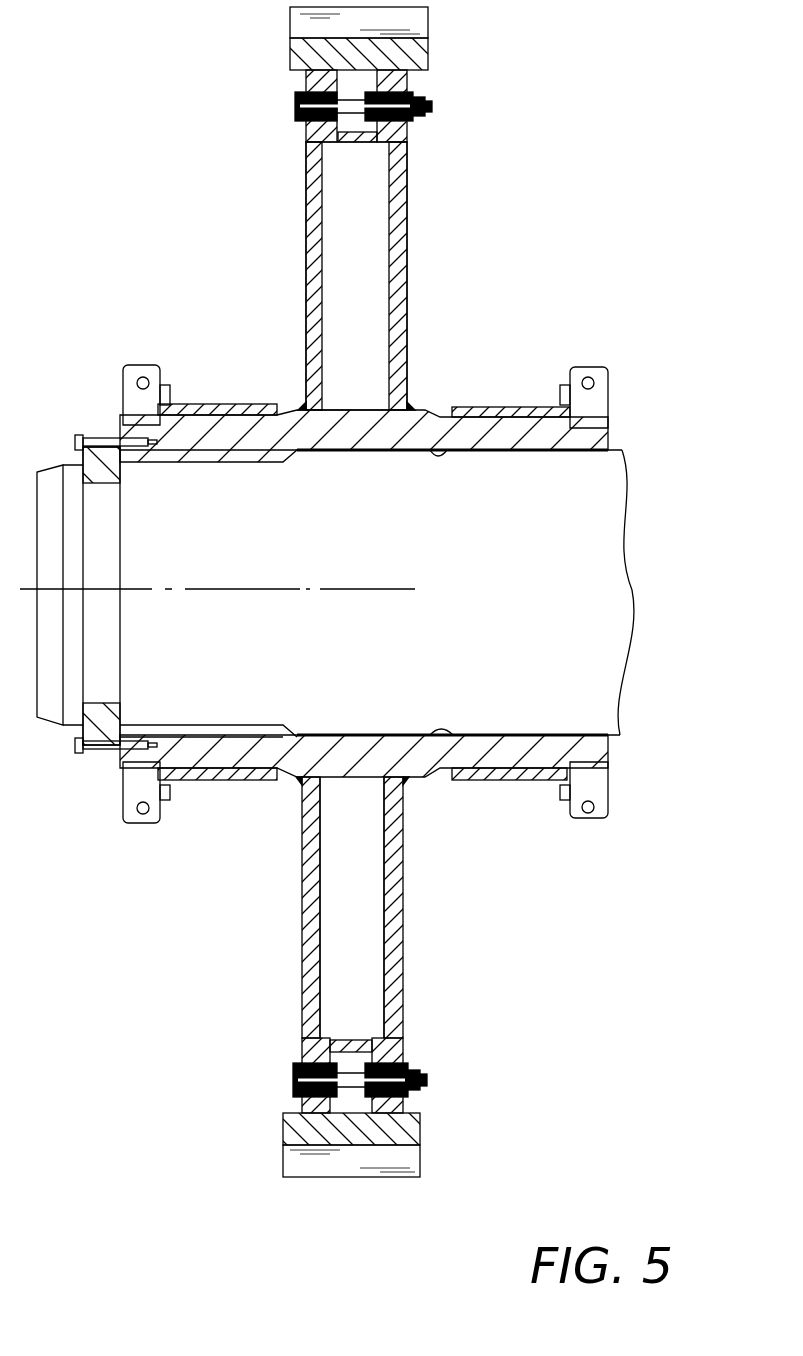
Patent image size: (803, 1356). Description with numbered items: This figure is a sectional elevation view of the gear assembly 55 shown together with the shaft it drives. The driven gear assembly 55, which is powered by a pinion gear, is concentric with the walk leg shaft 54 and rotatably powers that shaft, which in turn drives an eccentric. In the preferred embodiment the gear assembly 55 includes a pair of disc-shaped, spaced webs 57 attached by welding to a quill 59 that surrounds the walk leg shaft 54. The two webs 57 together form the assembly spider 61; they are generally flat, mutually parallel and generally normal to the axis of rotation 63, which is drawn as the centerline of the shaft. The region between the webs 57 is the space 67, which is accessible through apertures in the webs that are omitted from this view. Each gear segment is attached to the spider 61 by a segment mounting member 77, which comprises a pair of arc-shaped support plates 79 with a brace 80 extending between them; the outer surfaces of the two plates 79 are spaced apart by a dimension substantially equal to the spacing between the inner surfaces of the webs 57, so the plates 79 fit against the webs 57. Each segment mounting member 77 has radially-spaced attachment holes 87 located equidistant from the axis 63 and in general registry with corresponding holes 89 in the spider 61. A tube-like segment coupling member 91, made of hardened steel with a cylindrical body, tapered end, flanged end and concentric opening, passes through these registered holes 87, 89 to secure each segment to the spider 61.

The walk leg shaft 54 is at (600, 543).
The gear assembly 55 is at (432, 163).
The web 57 is at (407, 320).
The quill 59 is at (425, 768).
The assembly spider 61 is at (278, 280).
The axis of rotation 63 is at (223, 590).
The space 67 is at (367, 855).
The segment mounting member 77 is at (283, 1022).
The support plate 79 is at (380, 1053).
The brace 80 is at (357, 147).
The attachment hole 87 is at (407, 125).
The hole 89 is at (305, 123).
The segment coupling member 91 is at (403, 90).